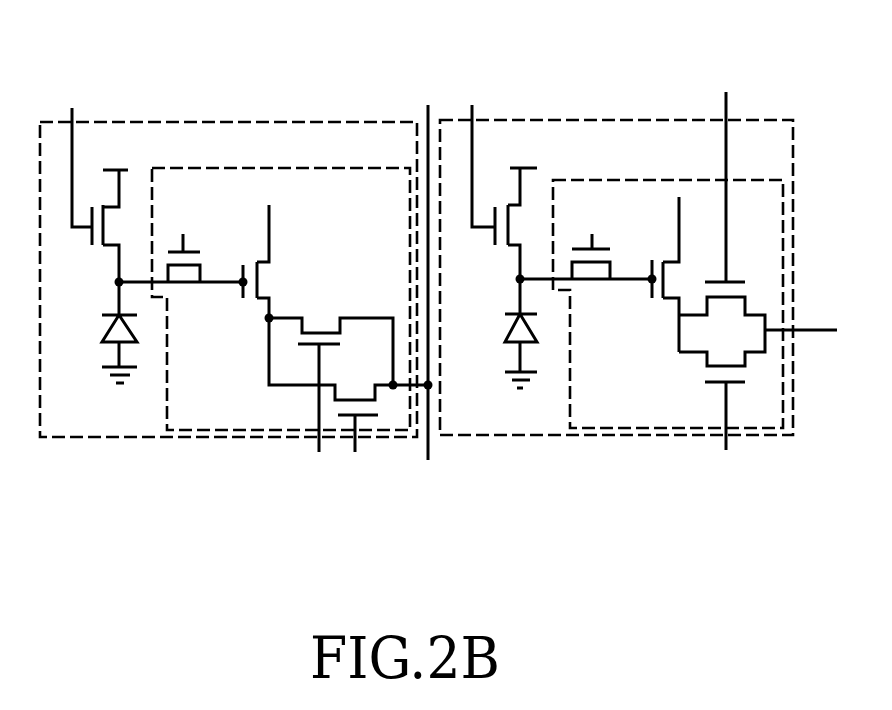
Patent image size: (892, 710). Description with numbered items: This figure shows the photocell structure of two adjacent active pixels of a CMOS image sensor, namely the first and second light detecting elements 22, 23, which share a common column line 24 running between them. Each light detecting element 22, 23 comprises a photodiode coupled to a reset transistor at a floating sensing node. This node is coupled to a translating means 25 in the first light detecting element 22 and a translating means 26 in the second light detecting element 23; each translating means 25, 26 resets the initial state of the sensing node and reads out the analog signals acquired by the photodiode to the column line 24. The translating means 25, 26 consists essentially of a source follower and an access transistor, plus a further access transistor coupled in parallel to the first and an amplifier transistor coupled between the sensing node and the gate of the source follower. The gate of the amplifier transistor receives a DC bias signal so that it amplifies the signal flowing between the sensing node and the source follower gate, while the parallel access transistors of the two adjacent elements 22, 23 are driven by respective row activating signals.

The first light detecting element 22 is at (383, 122).
The second light detecting element 23 is at (653, 120).
The column line 24 is at (430, 446).
The translating means 25 is at (308, 168).
The translating means 26 is at (748, 180).